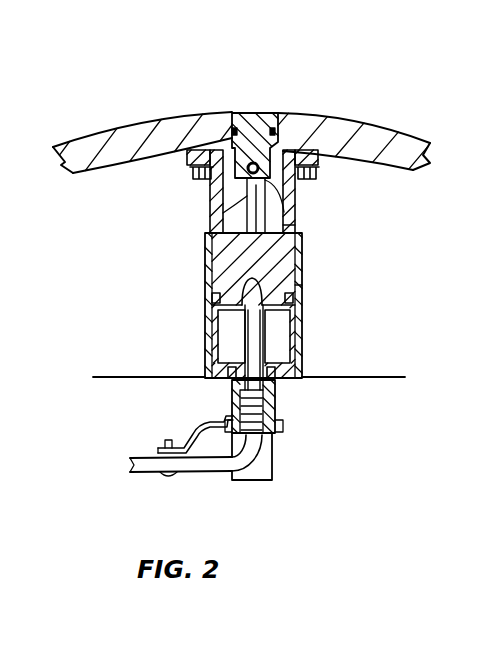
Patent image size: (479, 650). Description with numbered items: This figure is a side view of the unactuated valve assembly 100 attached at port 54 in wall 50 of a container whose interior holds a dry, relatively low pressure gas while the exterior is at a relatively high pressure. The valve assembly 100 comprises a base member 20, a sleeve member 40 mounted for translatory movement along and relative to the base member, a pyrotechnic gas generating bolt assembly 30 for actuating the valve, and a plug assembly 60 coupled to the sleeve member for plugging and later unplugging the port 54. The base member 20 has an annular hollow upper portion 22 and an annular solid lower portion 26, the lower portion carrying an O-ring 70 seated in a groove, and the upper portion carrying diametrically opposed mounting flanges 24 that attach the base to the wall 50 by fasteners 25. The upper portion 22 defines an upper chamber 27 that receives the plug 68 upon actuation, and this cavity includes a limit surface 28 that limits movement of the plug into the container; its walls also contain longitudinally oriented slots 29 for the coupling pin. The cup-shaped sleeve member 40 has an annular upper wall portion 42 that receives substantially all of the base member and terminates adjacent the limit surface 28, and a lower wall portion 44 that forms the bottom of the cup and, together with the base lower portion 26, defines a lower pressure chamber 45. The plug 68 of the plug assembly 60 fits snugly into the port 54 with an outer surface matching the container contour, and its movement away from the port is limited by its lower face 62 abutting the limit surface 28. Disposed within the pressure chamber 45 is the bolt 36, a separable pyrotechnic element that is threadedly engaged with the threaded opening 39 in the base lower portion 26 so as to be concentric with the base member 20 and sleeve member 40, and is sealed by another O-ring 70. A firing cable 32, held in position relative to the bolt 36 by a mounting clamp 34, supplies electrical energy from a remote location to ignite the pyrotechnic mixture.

The base member 20 is at (348, 228).
The upper portion 22 is at (228, 203).
The mounting flange 24 is at (317, 157).
The fastener 25 is at (312, 180).
The lower portion 26 is at (300, 288).
The upper chamber 27 is at (213, 184).
The limit surface 28 is at (297, 222).
The slot 29 is at (240, 218).
The pyrotechnic gas generating bolt assembly 30 is at (330, 428).
The firing cable 32 is at (133, 455).
The mounting clamp 34 is at (273, 478).
The bolt 36 is at (244, 340).
The threaded opening 39 is at (222, 312).
The sleeve member 40 is at (360, 327).
The upper wall portion 42 is at (205, 277).
The lower wall portion 44 is at (308, 379).
The lower pressure chamber 45 is at (278, 340).
The wall 50 is at (102, 147).
The port 54 is at (280, 113).
The plug assembly 60 is at (270, 94).
The lower face 62 is at (289, 209).
The plug 68 is at (243, 120).
The O-ring 70 is at (225, 113).
The valve assembly 100 is at (126, 268).